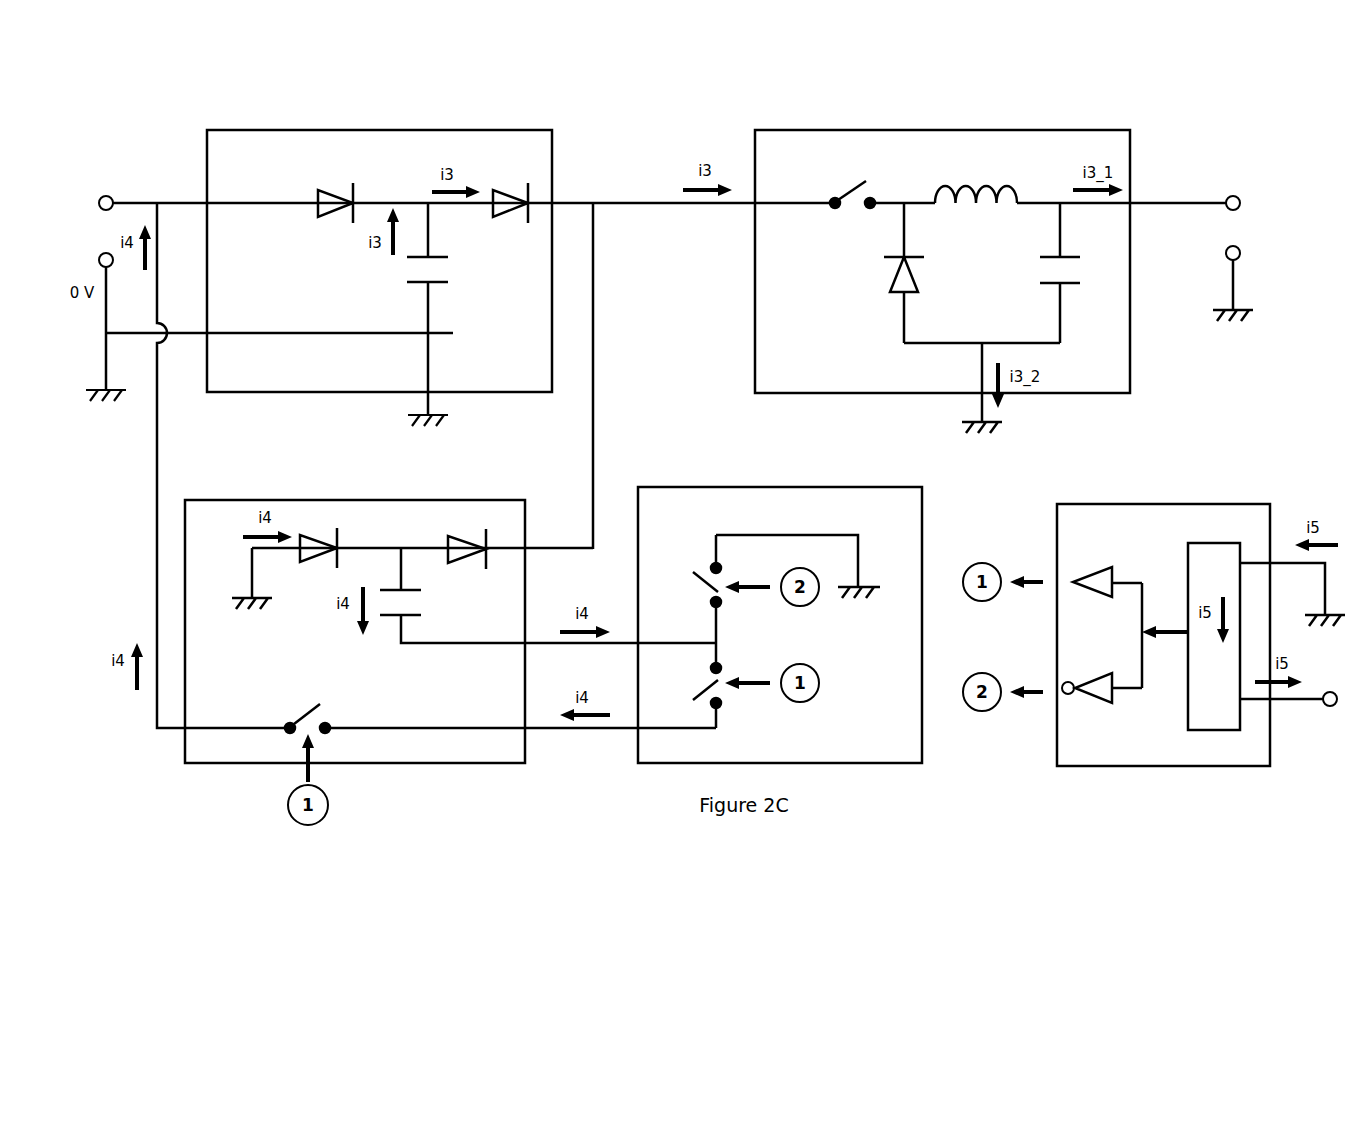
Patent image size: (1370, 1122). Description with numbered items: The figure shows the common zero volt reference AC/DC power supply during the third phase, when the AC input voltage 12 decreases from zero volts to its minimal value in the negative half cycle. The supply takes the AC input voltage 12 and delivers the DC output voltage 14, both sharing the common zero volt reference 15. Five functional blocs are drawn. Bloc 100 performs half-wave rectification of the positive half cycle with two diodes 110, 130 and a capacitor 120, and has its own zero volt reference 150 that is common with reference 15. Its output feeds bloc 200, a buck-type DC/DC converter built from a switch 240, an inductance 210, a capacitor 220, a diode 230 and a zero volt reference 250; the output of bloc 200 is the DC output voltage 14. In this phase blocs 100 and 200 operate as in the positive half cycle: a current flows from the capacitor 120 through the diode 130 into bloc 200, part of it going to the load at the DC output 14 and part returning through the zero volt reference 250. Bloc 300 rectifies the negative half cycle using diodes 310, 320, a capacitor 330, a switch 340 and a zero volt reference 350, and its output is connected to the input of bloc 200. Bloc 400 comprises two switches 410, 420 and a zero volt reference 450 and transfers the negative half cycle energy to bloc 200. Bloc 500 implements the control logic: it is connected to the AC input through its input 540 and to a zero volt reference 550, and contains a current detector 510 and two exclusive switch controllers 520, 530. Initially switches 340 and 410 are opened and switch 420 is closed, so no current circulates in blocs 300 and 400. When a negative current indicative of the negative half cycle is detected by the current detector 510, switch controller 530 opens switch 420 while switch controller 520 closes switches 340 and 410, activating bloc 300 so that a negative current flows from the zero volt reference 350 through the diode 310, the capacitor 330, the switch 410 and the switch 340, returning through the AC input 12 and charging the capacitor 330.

The AC input voltage 12 is at (100, 209).
The DC output voltage 14 is at (1240, 209).
The common zero volt reference 15 is at (104, 350).
The bloc 100 is at (379, 261).
The diode 110 is at (345, 188).
The capacitor 120 is at (433, 256).
The diode 130 is at (505, 188).
The zero volt reference 150 is at (426, 358).
The bloc 200 is at (942, 261).
The inductance 210 is at (985, 186).
The capacitor 220 is at (1068, 256).
The diode 230 is at (890, 277).
The switch 240 is at (852, 185).
The zero volt reference 250 is at (978, 368).
The bloc 300 is at (355, 631).
The diode 310 is at (318, 538).
The diode 320 is at (470, 538).
The capacitor 330 is at (410, 589).
The switch 340 is at (304, 711).
The zero volt reference 350 is at (250, 567).
The bloc 400 is at (780, 625).
The switch 410 is at (702, 684).
The switch 420 is at (702, 589).
The zero volt reference 450 is at (862, 558).
The bloc 500 is at (1163, 635).
The current detector 510 is at (1210, 543).
The first switch controller 520 is at (1115, 571).
The second switch controller 530 is at (1103, 673).
The input 540 is at (1332, 692).
The zero volt reference 550 is at (1333, 613).